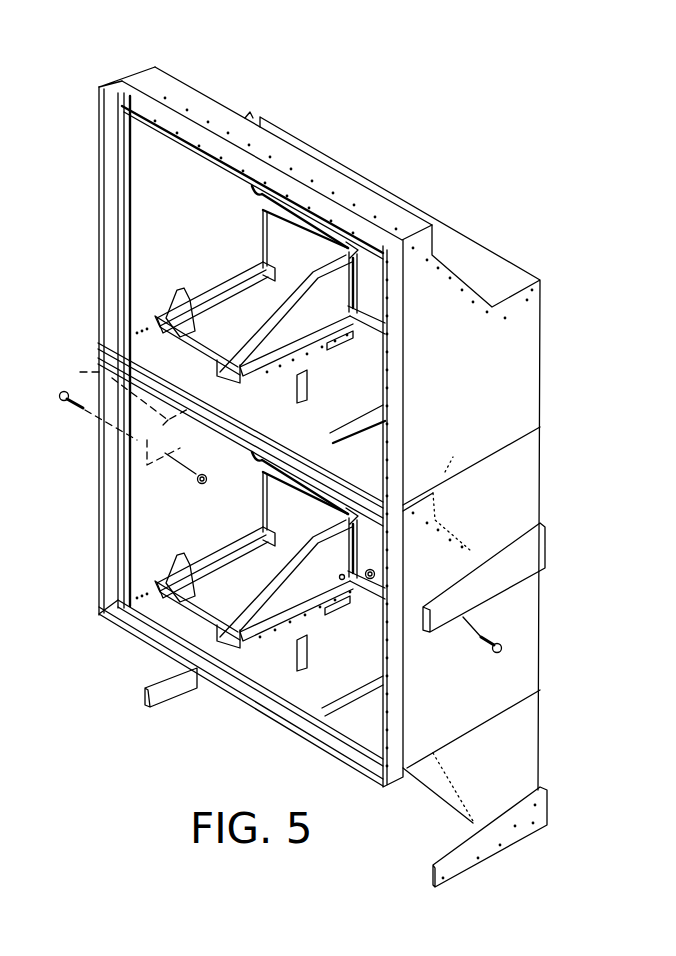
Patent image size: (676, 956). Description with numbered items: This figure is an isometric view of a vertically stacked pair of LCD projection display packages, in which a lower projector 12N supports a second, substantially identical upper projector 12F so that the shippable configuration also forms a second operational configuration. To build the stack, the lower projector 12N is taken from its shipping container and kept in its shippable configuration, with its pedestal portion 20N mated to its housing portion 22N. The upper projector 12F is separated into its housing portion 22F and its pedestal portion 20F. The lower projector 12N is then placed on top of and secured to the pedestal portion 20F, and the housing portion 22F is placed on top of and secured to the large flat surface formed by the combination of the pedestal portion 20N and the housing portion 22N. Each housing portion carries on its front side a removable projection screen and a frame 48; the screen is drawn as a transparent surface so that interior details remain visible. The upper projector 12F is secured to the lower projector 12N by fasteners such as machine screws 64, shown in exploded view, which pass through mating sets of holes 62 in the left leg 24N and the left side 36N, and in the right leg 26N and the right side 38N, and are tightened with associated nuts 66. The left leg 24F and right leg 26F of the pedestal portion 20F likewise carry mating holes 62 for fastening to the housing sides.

The upper projector 12F is at (552, 332).
The lower projector 12N is at (562, 530).
The pedestal portion of lower projector 20N is at (517, 512).
The pedestal portion of upper projector 20F is at (513, 772).
The housing portion of upper projector 22F is at (493, 414).
The housing portion of lower projector 22N is at (477, 672).
The left leg 24N is at (104, 410).
The left leg 24F is at (158, 708).
The right leg 26N is at (538, 548).
The right leg 26F is at (518, 827).
The left side 36N is at (167, 527).
The right side 38N is at (425, 683).
The frame 48 is at (104, 224).
The mating holes 62 is at (190, 167).
The machine screws 64 is at (65, 404).
The nuts 66 is at (207, 487).